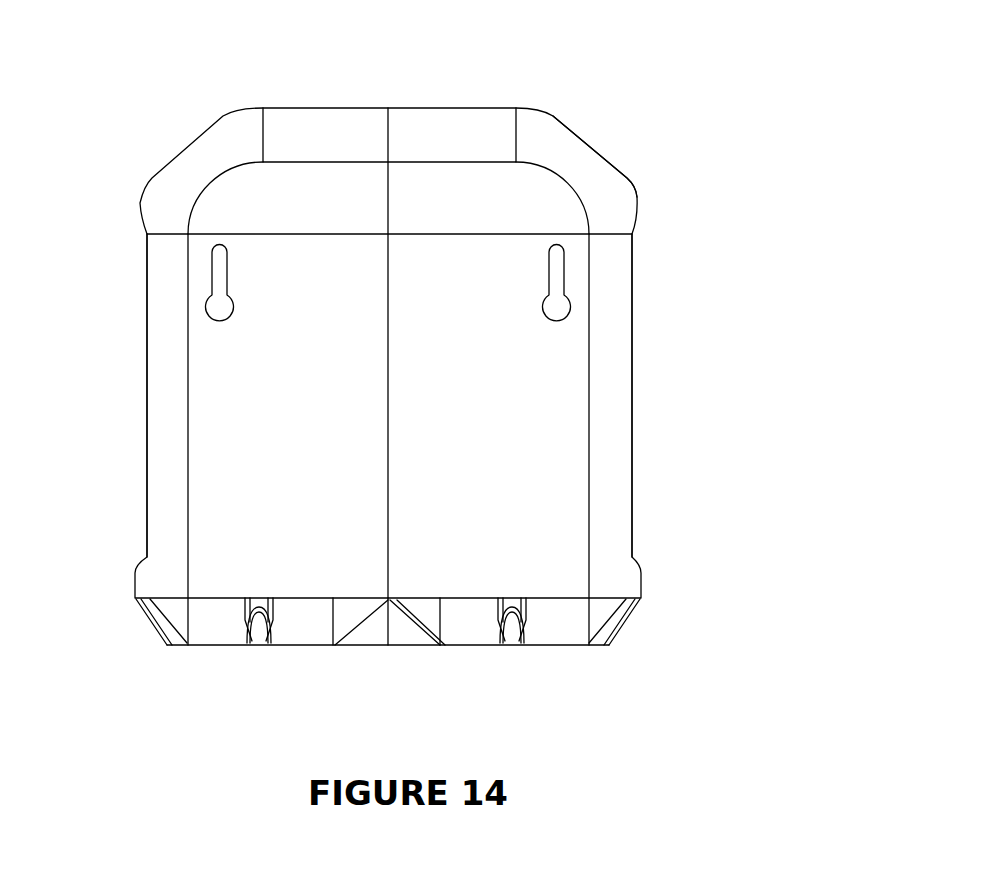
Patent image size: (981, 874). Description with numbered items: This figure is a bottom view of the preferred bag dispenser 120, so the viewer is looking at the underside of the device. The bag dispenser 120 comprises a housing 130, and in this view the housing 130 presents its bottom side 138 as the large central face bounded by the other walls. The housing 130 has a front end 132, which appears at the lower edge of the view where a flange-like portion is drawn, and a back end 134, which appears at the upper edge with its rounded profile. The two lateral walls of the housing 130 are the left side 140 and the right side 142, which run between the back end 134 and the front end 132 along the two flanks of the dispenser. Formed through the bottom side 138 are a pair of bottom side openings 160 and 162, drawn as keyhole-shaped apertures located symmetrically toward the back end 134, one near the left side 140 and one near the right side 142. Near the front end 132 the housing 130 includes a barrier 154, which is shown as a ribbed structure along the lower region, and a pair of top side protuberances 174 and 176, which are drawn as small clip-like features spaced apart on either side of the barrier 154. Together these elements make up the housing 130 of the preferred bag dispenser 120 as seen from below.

The bag dispenser 120 is at (193, 128).
The back end 134 is at (401, 100).
The bottom side 138 is at (532, 188).
The housing 130 is at (637, 197).
The left side 140 is at (147, 378).
The right side 142 is at (632, 373).
The bottom side opening 160 is at (218, 307).
The bottom side opening 162 is at (572, 302).
The front end 132 is at (580, 660).
The barrier 154 is at (377, 632).
The top side protuberance 174 is at (260, 632).
The top side protuberance 176 is at (513, 638).